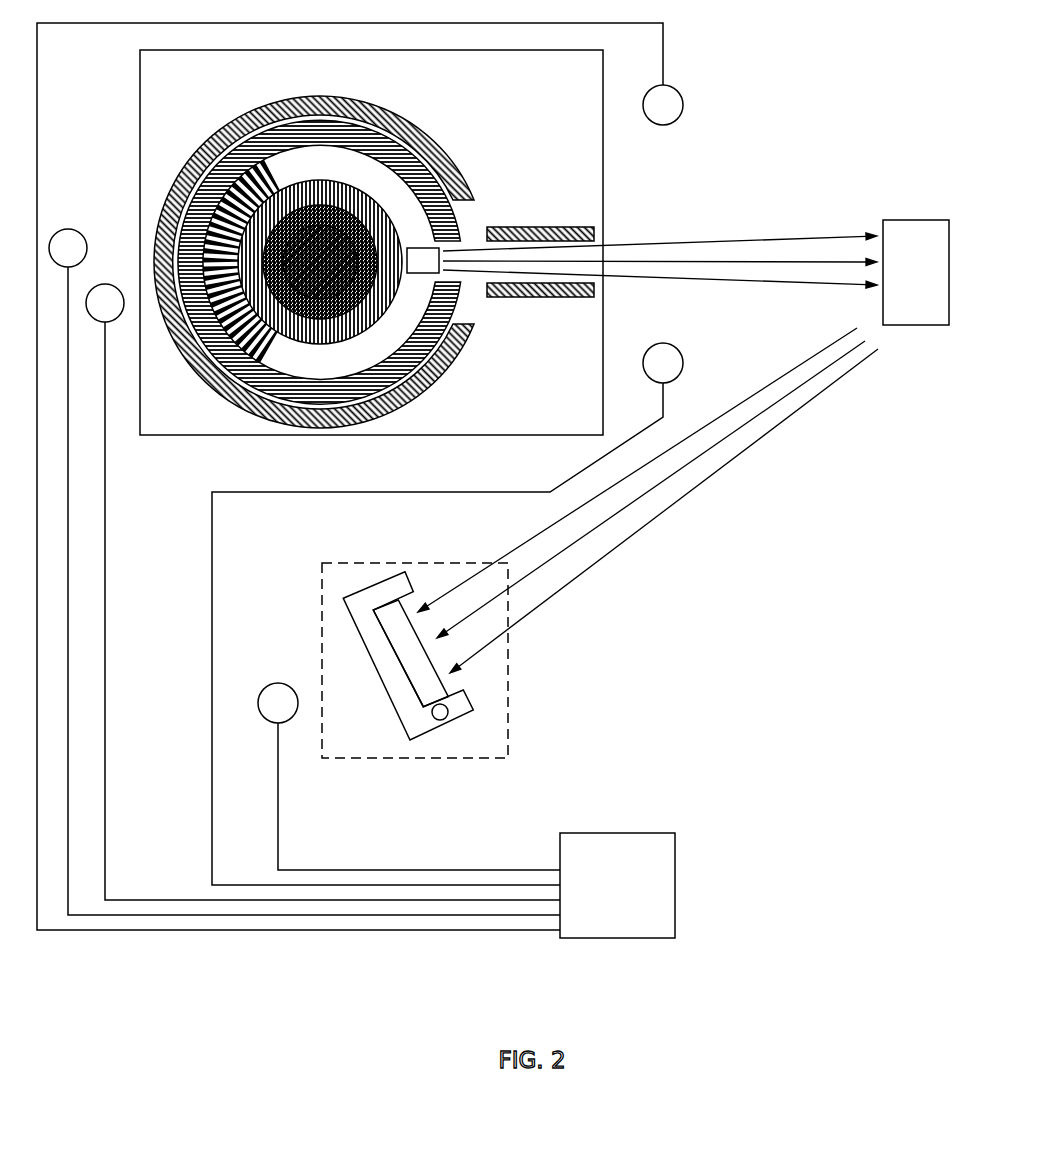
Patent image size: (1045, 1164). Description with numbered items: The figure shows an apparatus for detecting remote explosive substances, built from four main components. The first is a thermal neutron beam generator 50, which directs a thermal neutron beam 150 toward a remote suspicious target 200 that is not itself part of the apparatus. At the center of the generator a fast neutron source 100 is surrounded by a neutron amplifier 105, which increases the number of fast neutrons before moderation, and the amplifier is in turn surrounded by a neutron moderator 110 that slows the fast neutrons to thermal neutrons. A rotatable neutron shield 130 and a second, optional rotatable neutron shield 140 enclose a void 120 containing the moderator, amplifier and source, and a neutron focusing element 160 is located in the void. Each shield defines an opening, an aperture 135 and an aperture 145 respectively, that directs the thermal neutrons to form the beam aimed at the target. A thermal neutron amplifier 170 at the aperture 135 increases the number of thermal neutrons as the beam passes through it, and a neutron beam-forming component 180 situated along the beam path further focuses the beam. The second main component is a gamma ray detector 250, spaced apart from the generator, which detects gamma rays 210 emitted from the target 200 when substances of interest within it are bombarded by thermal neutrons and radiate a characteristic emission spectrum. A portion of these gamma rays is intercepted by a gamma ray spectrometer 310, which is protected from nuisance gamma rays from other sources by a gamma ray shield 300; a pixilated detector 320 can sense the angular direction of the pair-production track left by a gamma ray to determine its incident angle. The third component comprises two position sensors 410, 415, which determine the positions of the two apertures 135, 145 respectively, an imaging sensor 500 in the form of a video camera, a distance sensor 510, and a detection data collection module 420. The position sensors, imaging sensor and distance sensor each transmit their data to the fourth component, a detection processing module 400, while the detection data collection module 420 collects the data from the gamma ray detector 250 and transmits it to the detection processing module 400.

The thermal neutron beam generator 50 is at (371, 242).
The fast neutron source 100 is at (340, 293).
The neutron amplifier 105 is at (297, 305).
The neutron moderator 110 is at (378, 313).
The void 120 is at (320, 262).
The rotatable neutron shield 130 is at (435, 198).
The aperture 135 is at (455, 277).
The second rotatable neutron shield 140 is at (445, 155).
The aperture 145 is at (472, 222).
The thermal neutron beam 150 is at (660, 266).
The neutron focusing element 160 is at (250, 335).
The thermal neutron amplifier 170 is at (423, 260).
The neutron beam-forming component 180 is at (540, 262).
The remote suspicious target 200 is at (916, 272).
The gamma rays 210 is at (648, 500).
The gamma ray detector 250 is at (415, 660).
The gamma ray shield 300 is at (408, 656).
The gamma ray spectrometer 310 is at (410, 653).
The pixilated detector 320 is at (428, 715).
The detection processing module 400 is at (617, 885).
The position sensor 410 is at (162, 305).
The position sensor 415 is at (155, 248).
The detection data collection module 420 is at (390, 695).
The imaging sensor 500 is at (663, 363).
The distance sensor 510 is at (663, 105).